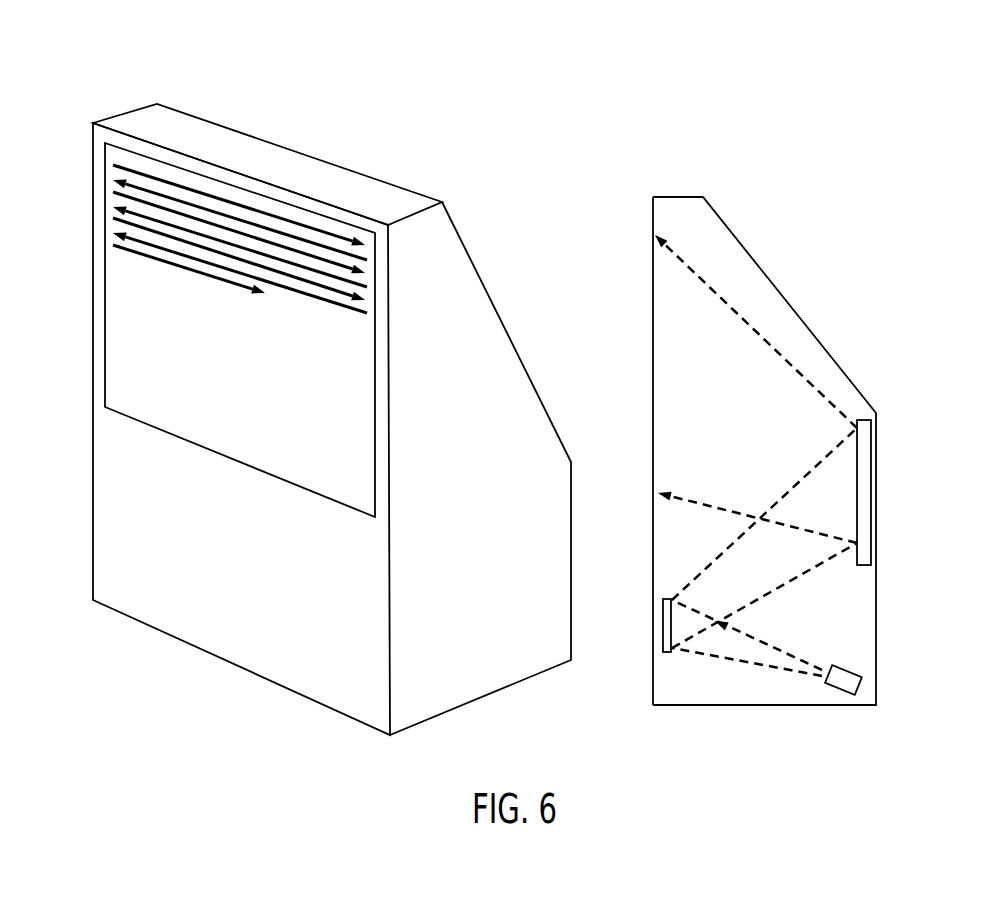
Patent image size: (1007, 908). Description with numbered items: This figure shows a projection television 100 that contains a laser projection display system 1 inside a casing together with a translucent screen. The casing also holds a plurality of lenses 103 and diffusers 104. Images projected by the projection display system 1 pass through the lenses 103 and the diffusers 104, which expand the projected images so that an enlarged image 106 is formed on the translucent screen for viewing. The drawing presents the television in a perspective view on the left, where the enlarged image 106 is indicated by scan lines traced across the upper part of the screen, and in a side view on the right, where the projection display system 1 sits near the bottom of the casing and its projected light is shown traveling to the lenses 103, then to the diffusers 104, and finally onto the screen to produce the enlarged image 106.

The projection television 100 is at (162, 73).
The lenses 103 is at (640, 620).
The diffusers 104 is at (899, 492).
The enlarged image 106 is at (240, 246).
The projection display system 1 is at (853, 668).